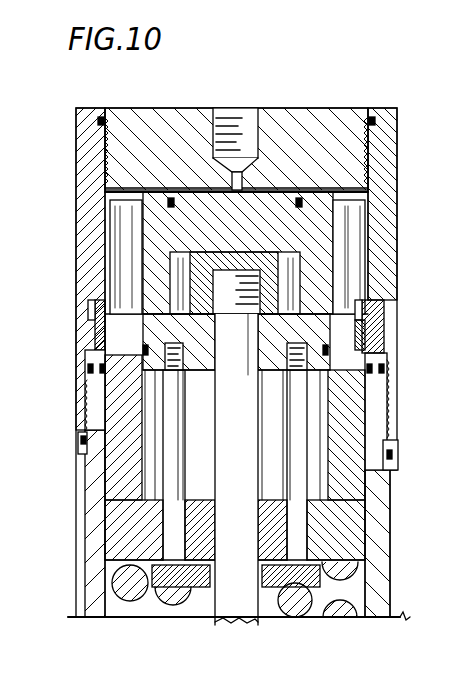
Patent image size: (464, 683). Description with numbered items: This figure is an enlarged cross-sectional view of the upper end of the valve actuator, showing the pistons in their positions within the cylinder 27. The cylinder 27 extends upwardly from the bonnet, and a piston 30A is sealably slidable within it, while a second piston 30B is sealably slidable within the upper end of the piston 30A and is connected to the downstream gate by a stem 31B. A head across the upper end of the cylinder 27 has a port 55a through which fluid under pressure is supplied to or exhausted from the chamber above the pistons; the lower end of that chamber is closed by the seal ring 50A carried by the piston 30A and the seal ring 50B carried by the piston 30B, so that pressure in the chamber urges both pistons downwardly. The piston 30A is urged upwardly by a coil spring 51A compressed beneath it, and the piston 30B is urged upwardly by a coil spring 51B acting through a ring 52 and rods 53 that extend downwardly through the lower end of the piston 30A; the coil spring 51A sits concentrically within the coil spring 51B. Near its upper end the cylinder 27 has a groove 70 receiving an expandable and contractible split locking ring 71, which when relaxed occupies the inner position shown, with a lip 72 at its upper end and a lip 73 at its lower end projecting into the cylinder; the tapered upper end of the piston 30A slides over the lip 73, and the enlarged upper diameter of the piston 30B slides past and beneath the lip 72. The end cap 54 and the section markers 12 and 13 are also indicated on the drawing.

The cylinder 27 is at (82, 567).
The end cap 54 is at (331, 108).
The port 55a is at (256, 122).
The piston 30B is at (352, 226).
The lip 72 is at (366, 272).
The split locking ring 71 is at (376, 320).
The groove 70 is at (387, 350).
The lip 73 is at (372, 398).
The piston 30A is at (392, 453).
The seal ring 50B is at (100, 292).
The seal ring 50A is at (106, 378).
The stem 31B is at (84, 434).
The rods 53 is at (352, 534).
The ring 52 is at (330, 583).
The coil spring 51A is at (358, 570).
The coil spring 51B is at (180, 604).
The section line 12 is at (37, 305).
The section line 13 is at (36, 487).